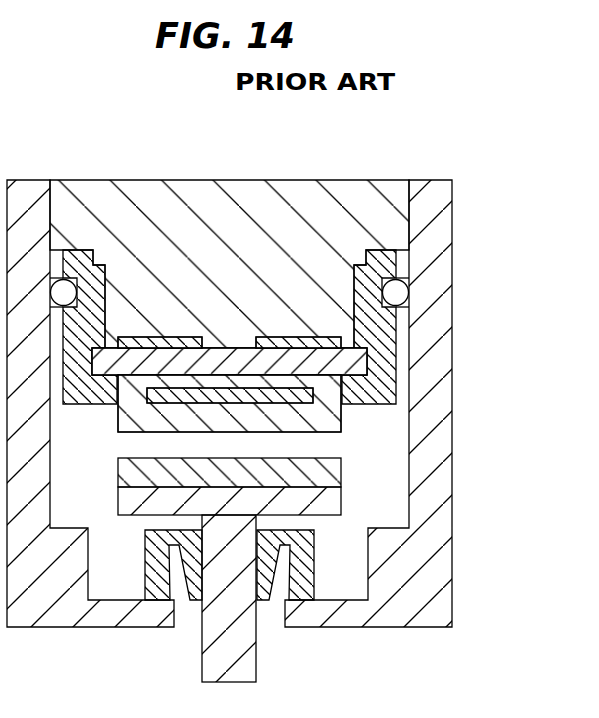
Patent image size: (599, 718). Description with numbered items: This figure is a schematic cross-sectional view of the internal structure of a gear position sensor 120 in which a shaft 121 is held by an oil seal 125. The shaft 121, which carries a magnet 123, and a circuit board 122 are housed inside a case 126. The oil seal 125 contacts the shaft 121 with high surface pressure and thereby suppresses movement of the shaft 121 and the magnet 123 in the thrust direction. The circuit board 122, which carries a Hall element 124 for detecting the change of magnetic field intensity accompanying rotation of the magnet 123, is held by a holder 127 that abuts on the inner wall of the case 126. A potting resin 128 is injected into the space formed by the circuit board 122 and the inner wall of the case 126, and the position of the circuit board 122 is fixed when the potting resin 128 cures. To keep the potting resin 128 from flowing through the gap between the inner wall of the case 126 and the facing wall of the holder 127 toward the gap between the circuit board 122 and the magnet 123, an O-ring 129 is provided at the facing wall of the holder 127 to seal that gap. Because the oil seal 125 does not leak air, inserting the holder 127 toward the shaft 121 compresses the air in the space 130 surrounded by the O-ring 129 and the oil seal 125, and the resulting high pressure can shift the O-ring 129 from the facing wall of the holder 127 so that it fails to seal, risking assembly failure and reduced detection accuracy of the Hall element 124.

The gear position sensor 120 is at (143, 129).
The shaft 121 is at (248, 657).
The circuit board 122 is at (317, 402).
The magnet 123 is at (323, 467).
The Hall element 124 is at (222, 392).
The oil seal 125 is at (155, 583).
The case 126 is at (443, 218).
The holder 127 is at (384, 341).
The potting resin 128 is at (206, 205).
The O-ring 129 is at (404, 289).
The space 130 is at (392, 422).